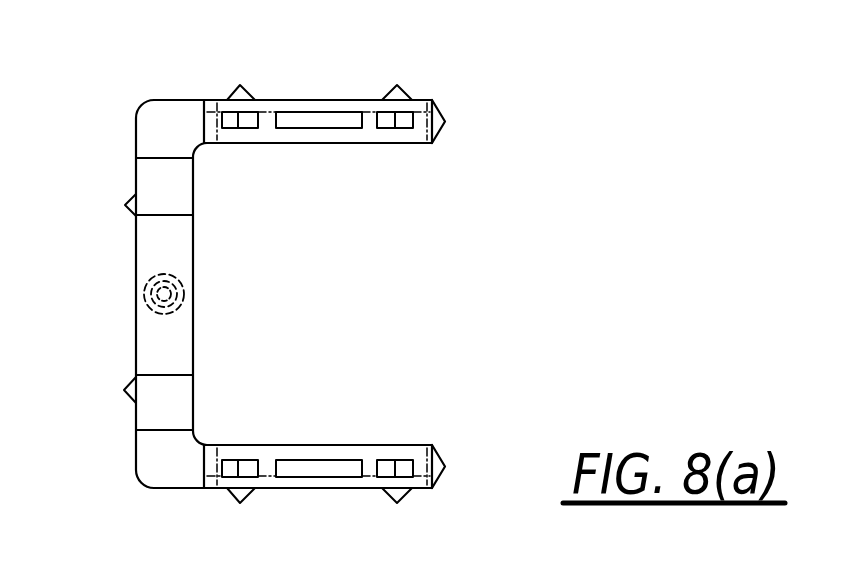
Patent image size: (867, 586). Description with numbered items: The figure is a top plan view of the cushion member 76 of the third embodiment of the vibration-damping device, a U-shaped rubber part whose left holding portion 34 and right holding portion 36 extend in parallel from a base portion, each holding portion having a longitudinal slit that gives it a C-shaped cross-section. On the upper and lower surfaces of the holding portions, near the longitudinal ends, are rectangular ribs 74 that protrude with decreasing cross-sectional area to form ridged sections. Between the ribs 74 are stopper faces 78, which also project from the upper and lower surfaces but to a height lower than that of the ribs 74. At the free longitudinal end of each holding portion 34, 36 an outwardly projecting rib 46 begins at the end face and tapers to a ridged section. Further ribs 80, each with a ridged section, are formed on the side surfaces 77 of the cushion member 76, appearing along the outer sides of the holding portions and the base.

The cushion member 76 is at (128, 107).
The rib 74 is at (226, 118).
The side surface 77 is at (287, 100).
The stopper face 78 is at (329, 118).
The rib 80 is at (244, 85).
The left holding portion 34 is at (365, 100).
The right holding portion 36 is at (364, 489).
The outwardly projecting rib 46 is at (445, 112).